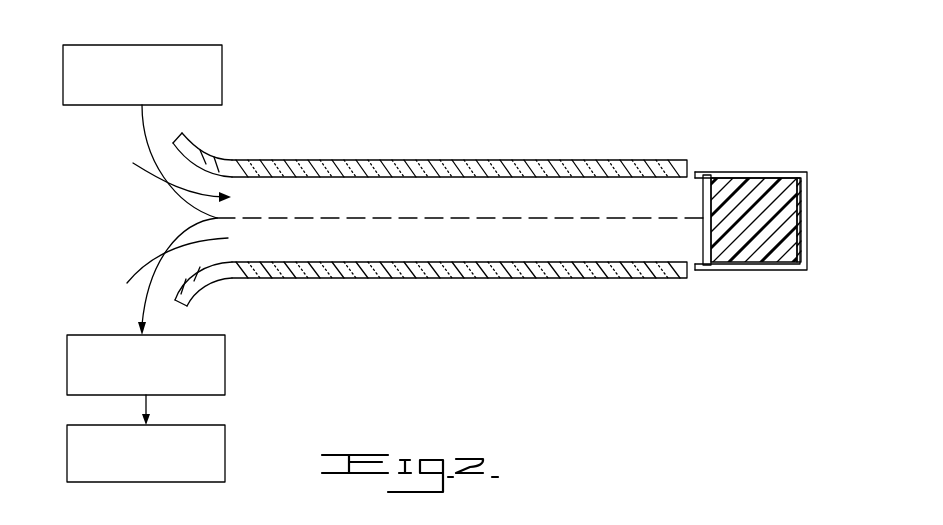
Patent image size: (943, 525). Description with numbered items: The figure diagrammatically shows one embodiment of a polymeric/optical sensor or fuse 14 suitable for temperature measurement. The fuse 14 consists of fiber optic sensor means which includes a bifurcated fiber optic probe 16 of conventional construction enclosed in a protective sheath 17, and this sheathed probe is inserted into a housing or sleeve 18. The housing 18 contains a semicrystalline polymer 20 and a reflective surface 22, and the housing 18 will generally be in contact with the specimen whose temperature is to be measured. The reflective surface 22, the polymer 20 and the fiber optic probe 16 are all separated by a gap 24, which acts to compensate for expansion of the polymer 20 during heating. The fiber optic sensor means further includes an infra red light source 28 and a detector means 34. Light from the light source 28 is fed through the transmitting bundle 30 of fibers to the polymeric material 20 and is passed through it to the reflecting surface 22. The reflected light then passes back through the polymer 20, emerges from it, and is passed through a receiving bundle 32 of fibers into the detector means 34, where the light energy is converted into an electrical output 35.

The fuse 14 is at (438, 199).
The bifurcated fiber optic probe 16 is at (519, 158).
The protective sheath 17 is at (508, 278).
The housing 18 is at (755, 229).
The semicrystalline polymer 20 is at (758, 256).
The reflective surface 22 is at (808, 207).
The gap 24 is at (704, 271).
The infra red light source 28 is at (222, 67).
The transmitting bundle 30 is at (318, 188).
The receiving bundle 32 is at (333, 253).
The detector means 34 is at (225, 368).
The electrical output 35 is at (225, 452).